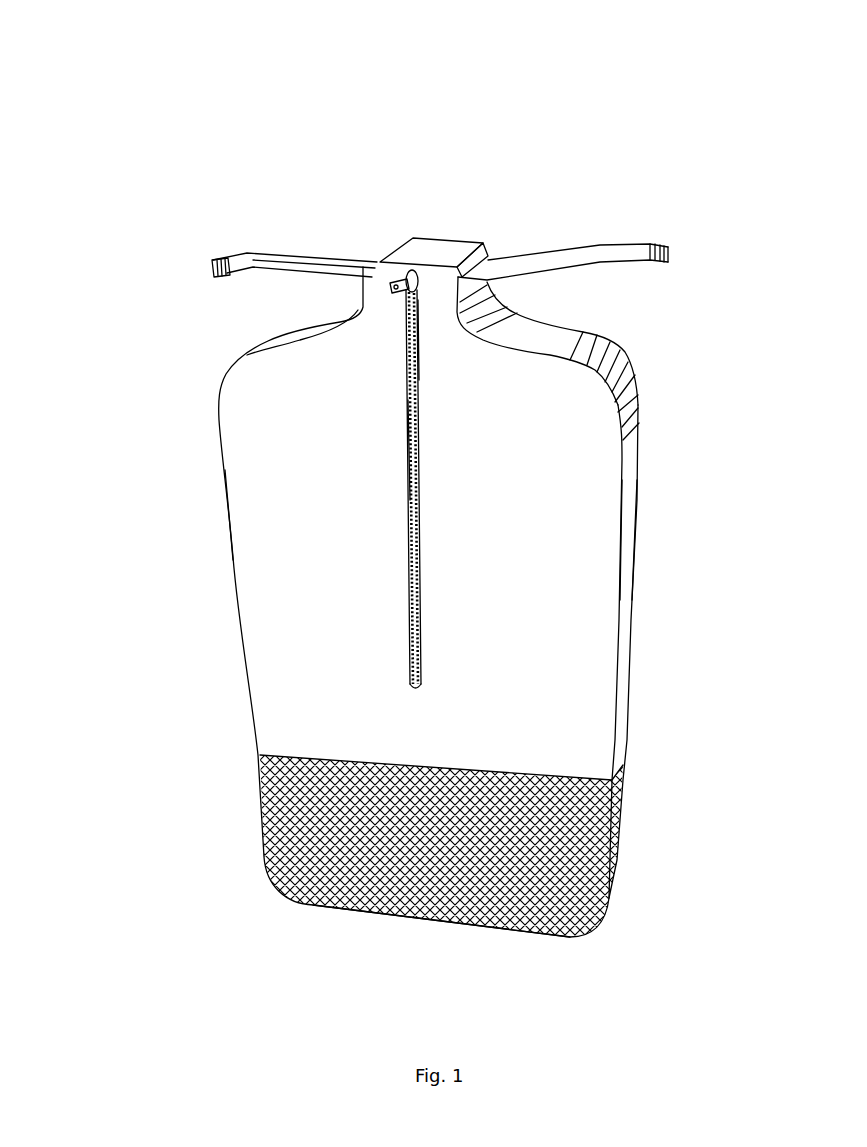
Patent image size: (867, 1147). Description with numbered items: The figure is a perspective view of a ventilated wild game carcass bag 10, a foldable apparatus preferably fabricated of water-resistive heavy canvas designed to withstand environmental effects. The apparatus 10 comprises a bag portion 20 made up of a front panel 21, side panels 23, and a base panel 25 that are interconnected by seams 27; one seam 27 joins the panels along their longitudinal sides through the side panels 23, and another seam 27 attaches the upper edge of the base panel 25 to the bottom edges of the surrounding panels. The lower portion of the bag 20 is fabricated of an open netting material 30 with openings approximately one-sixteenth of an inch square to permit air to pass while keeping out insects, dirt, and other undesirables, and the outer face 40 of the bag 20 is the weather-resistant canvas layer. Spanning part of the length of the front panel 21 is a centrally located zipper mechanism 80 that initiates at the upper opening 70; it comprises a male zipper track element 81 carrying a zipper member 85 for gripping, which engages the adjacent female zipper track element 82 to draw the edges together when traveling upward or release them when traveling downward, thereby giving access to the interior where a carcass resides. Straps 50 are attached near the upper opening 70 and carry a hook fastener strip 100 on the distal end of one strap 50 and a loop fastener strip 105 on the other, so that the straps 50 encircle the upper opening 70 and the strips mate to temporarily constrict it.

The ventilated wild game carcass bag 10 is at (655, 145).
The bag portion 20 is at (690, 446).
The front panel 21 is at (590, 553).
The side panels 23 is at (627, 517).
The base panel 25 is at (330, 825).
The seams 27 is at (233, 557).
The open netting material 30 is at (495, 865).
The outer face 40 is at (325, 688).
The straps 50 is at (262, 268).
The upper opening 70 is at (405, 250).
The zipper mechanism 80 is at (430, 461).
The male zipper track element 81 is at (408, 410).
The female zipper track element 82 is at (410, 387).
The zipper member 85 is at (397, 283).
The hook fastener strip 100 is at (212, 268).
The loop fastener strip 105 is at (657, 247).